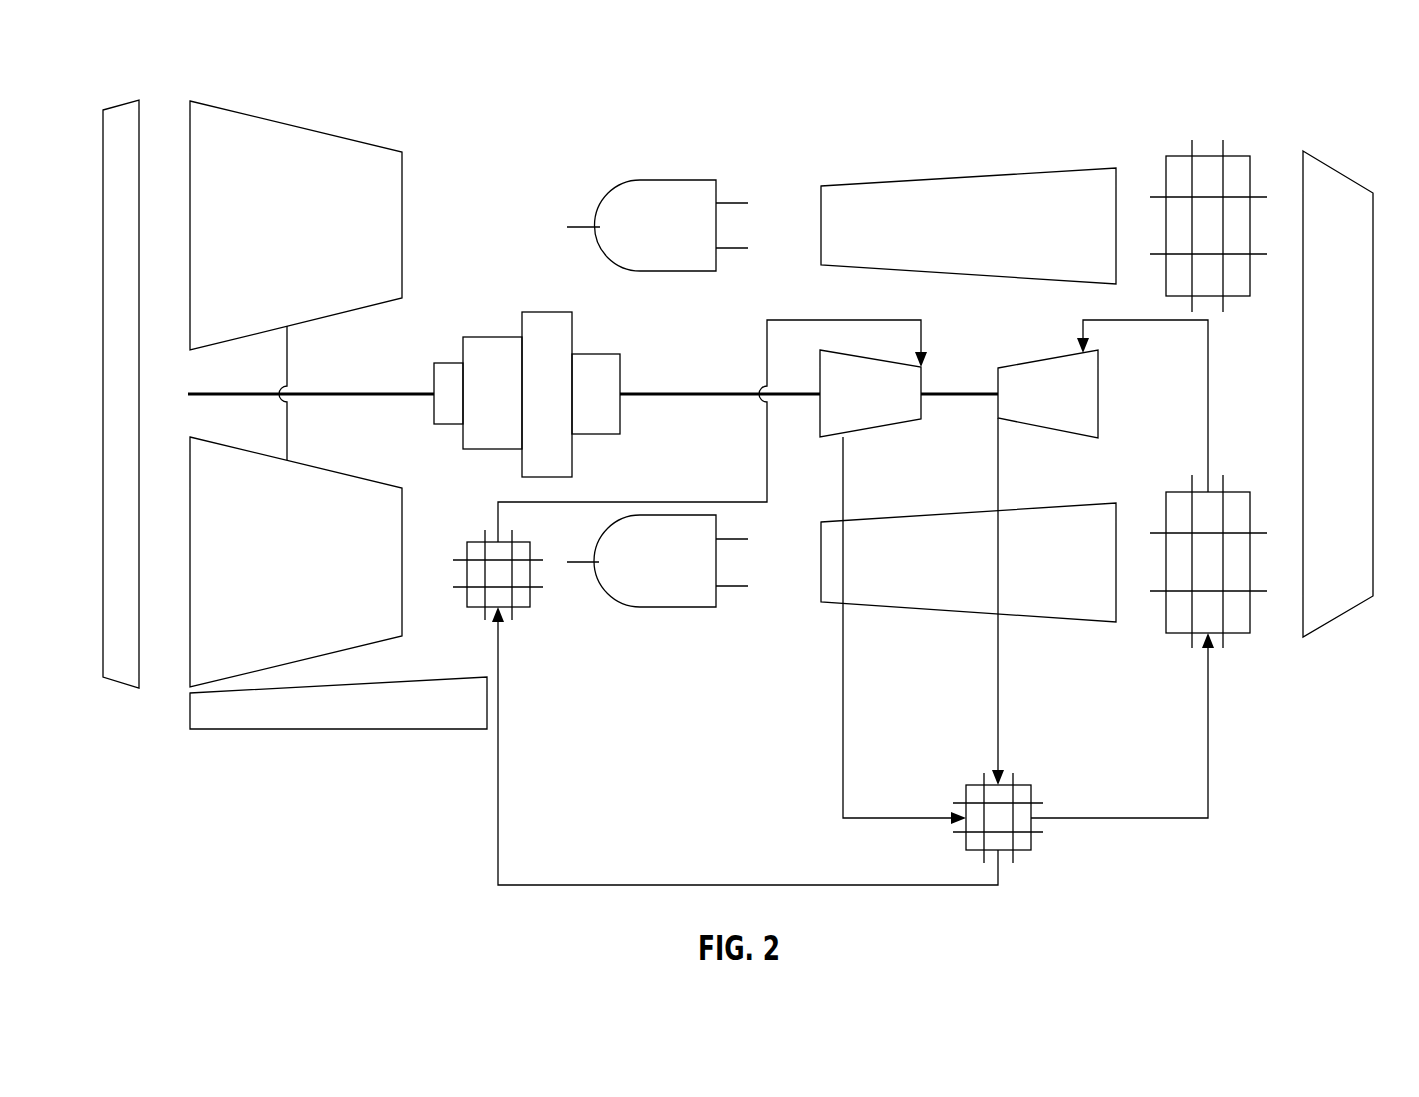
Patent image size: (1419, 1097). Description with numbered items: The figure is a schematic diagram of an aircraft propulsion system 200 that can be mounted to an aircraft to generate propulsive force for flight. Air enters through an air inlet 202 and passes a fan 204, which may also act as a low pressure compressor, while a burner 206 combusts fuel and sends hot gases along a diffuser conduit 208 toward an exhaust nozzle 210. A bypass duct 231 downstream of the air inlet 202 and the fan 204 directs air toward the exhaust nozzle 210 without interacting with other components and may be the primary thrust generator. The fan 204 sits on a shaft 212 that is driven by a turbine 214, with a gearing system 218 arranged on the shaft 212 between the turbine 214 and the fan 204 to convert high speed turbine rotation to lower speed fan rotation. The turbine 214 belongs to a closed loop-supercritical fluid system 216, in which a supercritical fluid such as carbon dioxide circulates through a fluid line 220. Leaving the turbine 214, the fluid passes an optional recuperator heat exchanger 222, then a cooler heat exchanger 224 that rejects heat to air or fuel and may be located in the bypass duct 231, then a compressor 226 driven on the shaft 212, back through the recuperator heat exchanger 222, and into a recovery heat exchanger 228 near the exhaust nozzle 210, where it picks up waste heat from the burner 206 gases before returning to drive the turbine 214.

The aircraft propulsion system 200 is at (184, 68).
The air inlet 202 is at (126, 673).
The fan 204 is at (353, 157).
The burner 206 is at (672, 180).
The diffuser conduit 208 is at (995, 266).
The exhaust nozzle 210 is at (1340, 614).
The shaft 212 is at (718, 392).
The turbine 214 is at (1088, 396).
The closed loop-supercritical fluid system 216 is at (1272, 898).
The gearing system 218 is at (547, 312).
The fluid line 220 is at (1150, 820).
The recuperator heat exchanger 222 is at (1023, 852).
The cooler heat exchanger 224 is at (522, 608).
The compressor 226 is at (883, 412).
The recovery heat exchanger 228 is at (1207, 162).
The bypass duct 231 is at (342, 732).